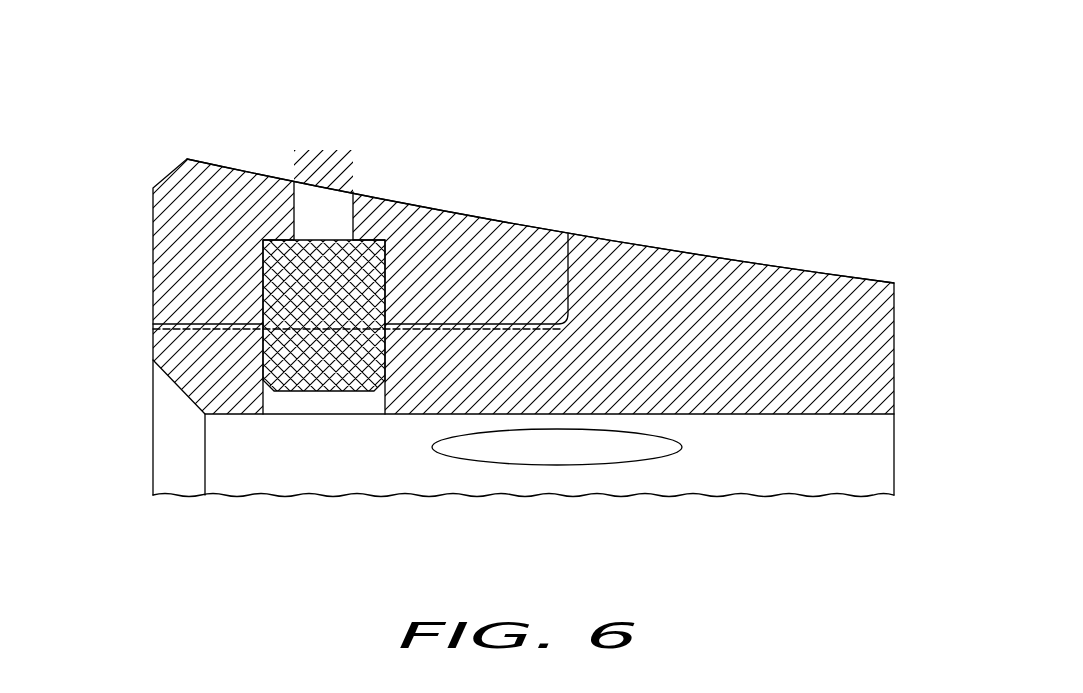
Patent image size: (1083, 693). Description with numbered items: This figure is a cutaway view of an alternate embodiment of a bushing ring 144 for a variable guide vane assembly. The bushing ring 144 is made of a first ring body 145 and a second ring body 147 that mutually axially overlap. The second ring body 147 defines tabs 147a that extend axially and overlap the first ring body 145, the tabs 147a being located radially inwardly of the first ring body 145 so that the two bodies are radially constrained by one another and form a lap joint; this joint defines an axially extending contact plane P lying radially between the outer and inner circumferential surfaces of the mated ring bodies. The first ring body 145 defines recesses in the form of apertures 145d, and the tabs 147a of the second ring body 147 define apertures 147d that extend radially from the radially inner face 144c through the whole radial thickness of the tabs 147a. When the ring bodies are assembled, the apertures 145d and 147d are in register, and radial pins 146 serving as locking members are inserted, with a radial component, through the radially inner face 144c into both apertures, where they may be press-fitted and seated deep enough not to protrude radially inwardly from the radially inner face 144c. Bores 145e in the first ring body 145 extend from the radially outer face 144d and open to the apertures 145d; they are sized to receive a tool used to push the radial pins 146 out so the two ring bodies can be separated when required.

The bushing ring 144 is at (758, 155).
The radially inner face 144c is at (865, 453).
The radially outer face 144d is at (771, 265).
The first ring body 145 is at (470, 200).
The apertures 145d is at (263, 288).
The bores 145e is at (295, 207).
The radial pins 146 is at (295, 339).
The second ring body 147 is at (780, 434).
The tabs 147a is at (430, 385).
The apertures 147d is at (263, 395).
The contact plane P is at (490, 325).